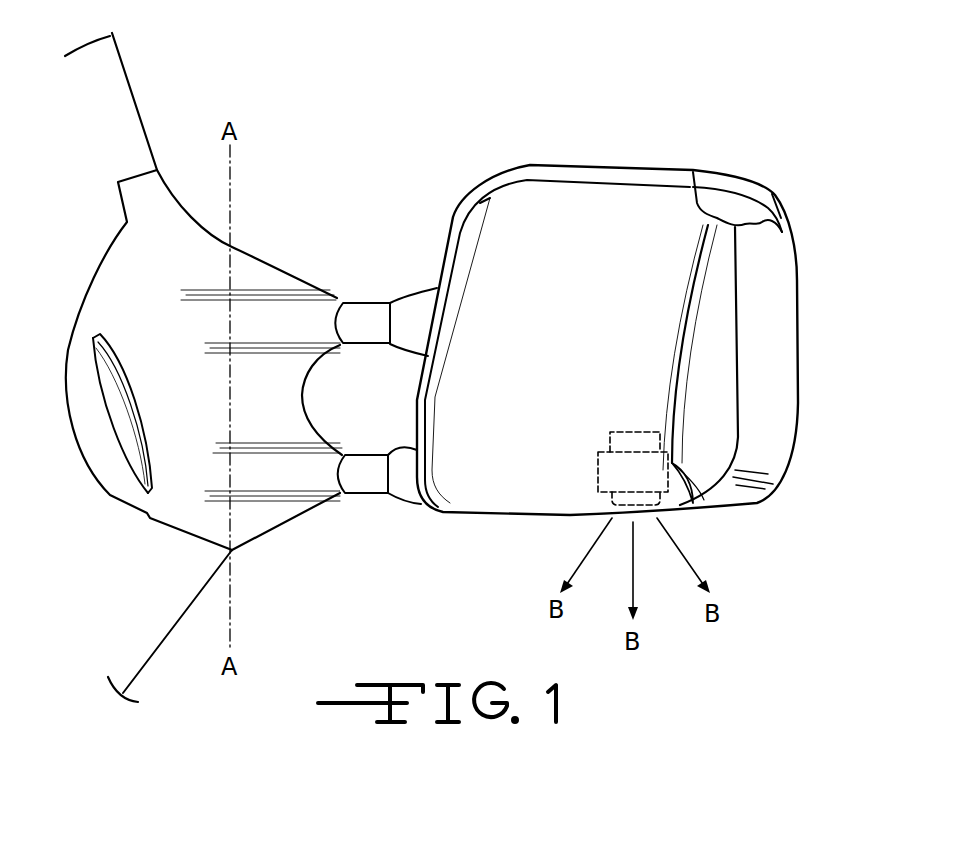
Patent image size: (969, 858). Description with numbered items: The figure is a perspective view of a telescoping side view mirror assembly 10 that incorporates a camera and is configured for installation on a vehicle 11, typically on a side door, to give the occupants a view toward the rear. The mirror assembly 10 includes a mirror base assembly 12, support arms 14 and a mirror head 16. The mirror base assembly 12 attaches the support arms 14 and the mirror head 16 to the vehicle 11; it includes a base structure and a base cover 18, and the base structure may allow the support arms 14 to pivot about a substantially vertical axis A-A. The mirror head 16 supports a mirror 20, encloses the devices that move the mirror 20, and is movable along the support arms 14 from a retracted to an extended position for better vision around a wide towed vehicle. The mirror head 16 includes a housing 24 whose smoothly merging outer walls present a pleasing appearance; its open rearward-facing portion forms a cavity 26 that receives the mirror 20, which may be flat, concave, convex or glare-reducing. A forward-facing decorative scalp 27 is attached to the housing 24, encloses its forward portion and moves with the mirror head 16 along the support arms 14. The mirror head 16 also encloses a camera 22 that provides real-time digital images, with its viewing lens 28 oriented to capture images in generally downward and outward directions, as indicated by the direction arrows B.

The mirror assembly 10 is at (690, 100).
The vehicle 11 is at (60, 190).
The mirror base assembly 12 is at (160, 524).
The support arms 14 is at (363, 302).
The mirror head 16 is at (802, 391).
The base cover 18 is at (267, 537).
The mirror 20 is at (777, 203).
The camera 22 is at (690, 472).
The housing 24 is at (612, 163).
The cavity 26 is at (767, 190).
The scalp 27 is at (570, 355).
The viewing lens 28 is at (620, 505).